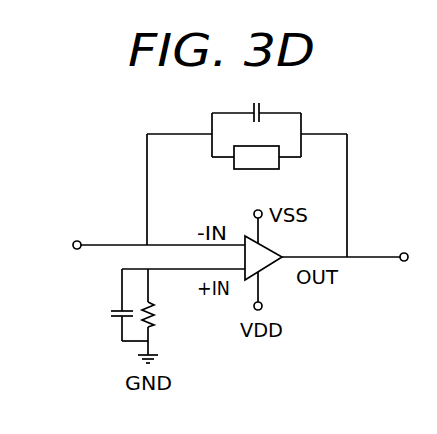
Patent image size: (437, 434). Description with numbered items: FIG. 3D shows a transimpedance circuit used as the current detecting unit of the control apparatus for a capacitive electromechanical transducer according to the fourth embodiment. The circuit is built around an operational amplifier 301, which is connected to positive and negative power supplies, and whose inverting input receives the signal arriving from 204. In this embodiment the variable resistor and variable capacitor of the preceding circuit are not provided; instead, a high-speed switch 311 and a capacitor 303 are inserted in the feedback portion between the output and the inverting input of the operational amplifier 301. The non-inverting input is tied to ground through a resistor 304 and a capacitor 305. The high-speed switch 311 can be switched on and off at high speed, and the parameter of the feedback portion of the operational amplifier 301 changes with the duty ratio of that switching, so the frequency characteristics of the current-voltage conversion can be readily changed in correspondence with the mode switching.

The preceding stage (input source) 204 is at (62, 232).
The operational amplifier 301 is at (267, 269).
The capacitor 303 is at (265, 107).
The resistor 304 is at (153, 327).
The capacitor 305 is at (111, 313).
The high-speed switch 311 is at (270, 170).